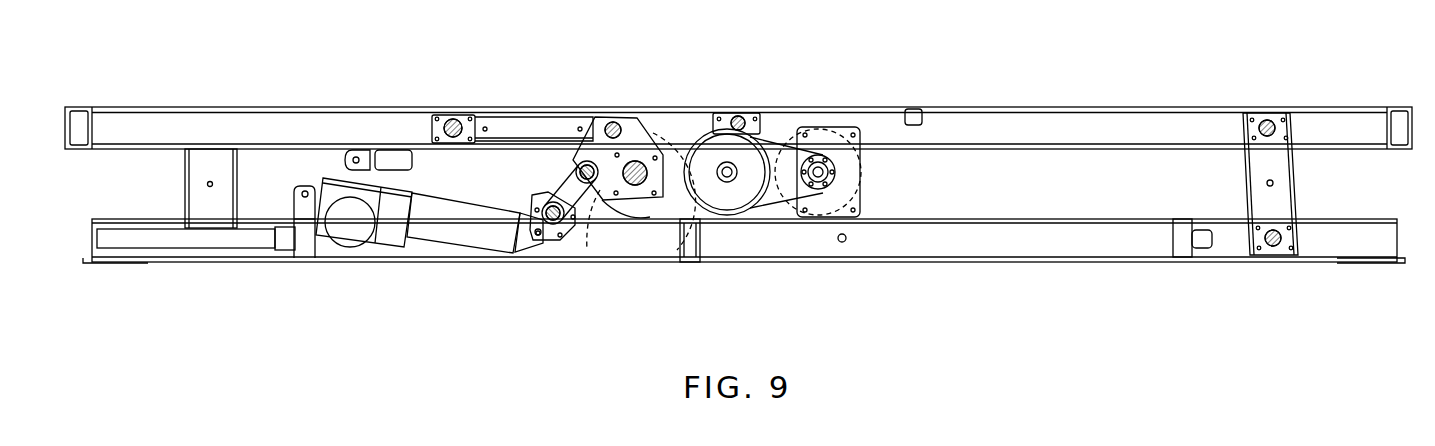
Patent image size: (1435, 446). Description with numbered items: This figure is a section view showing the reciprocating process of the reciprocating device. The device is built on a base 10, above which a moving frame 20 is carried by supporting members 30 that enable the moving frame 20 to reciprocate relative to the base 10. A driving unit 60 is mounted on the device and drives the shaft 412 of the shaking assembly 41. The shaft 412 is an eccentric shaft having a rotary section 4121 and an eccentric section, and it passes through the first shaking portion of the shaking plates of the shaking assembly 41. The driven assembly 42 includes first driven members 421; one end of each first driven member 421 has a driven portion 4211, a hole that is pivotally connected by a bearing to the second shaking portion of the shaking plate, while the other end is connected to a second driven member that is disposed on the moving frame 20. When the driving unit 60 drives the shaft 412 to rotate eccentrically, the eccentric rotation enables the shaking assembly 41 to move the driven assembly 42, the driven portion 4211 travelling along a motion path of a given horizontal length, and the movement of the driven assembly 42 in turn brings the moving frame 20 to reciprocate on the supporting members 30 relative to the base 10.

The base 10 is at (1093, 245).
The moving frame 20 is at (1167, 127).
The supporting member 30 is at (1260, 193).
The shaking assembly 41 is at (643, 189).
The shaft 412 is at (645, 182).
The rotary section 4121 is at (590, 205).
The driven portion 4211 is at (617, 120).
The first driven member 421 is at (553, 132).
The driven assembly 42 is at (495, 92).
The driving unit 60 is at (831, 122).